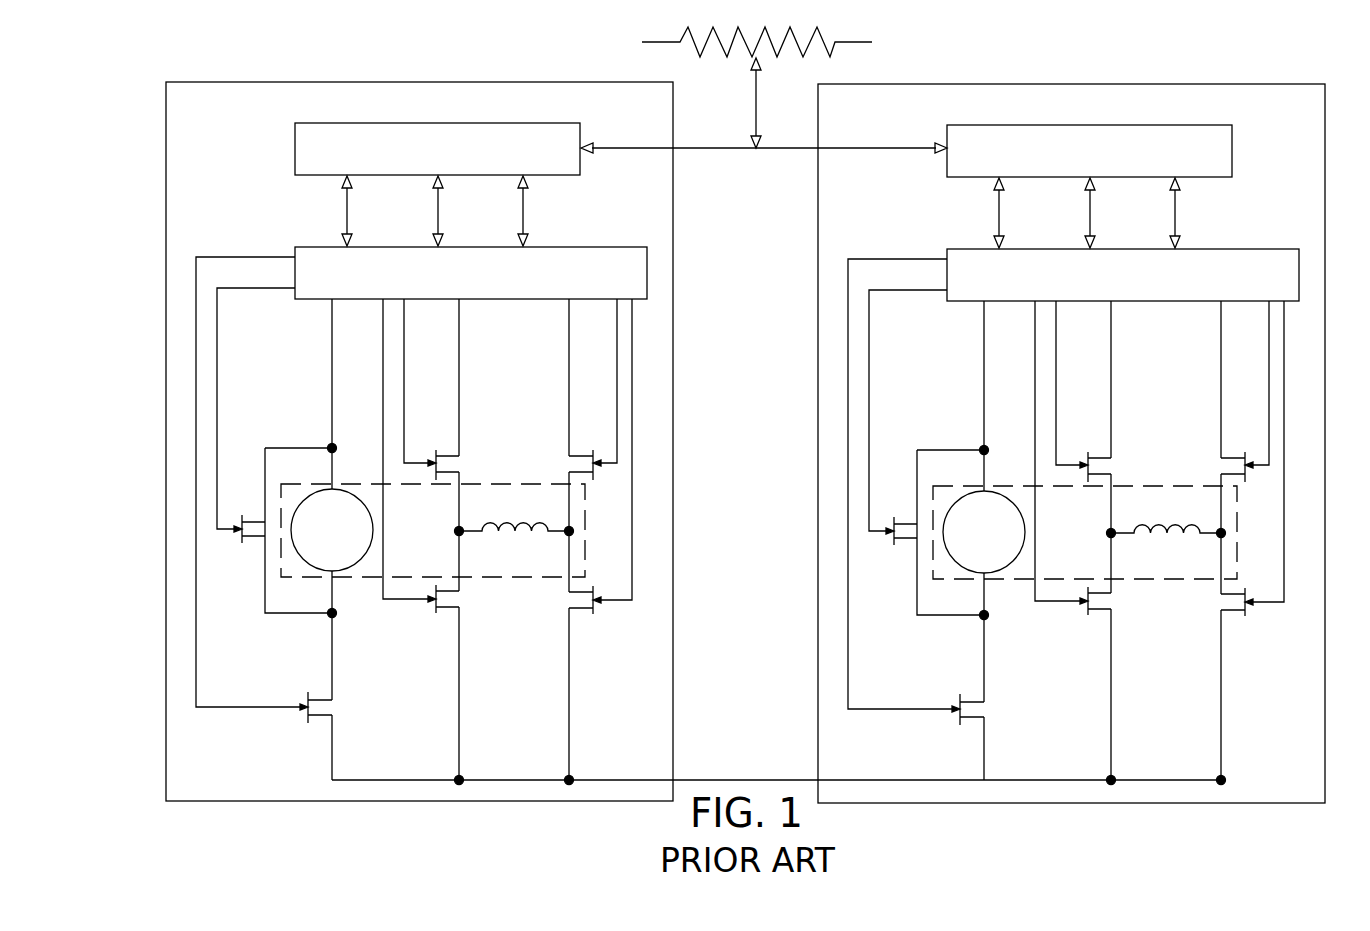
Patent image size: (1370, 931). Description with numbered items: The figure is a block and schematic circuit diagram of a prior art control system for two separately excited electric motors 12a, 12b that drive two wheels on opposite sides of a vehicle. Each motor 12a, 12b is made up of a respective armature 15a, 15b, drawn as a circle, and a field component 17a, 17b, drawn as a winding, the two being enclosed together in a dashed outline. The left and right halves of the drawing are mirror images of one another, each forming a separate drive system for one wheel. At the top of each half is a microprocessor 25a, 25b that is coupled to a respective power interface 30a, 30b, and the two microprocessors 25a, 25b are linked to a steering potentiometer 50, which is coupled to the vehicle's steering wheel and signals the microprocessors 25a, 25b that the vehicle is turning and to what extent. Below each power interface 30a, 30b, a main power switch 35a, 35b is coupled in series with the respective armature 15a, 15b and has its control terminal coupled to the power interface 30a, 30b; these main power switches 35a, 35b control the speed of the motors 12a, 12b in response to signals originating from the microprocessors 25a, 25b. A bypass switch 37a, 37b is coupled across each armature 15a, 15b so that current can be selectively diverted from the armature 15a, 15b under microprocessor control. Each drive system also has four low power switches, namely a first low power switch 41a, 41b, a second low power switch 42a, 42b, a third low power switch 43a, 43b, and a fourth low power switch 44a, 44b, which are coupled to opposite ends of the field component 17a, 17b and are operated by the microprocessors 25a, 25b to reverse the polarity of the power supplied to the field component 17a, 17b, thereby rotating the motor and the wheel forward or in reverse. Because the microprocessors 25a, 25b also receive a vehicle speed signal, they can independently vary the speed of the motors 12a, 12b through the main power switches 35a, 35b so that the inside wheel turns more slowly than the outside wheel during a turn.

The steering potentiometer 50 is at (738, 55).
The microprocessor 25a is at (425, 122).
The microprocessor 25b is at (1089, 135).
The power interface 30a is at (322, 246).
The power interface 30b is at (1100, 256).
The armature 15a is at (318, 490).
The armature 15b is at (973, 512).
The field component 17a is at (492, 537).
The field component 17b is at (1166, 534).
The electric motor 12a is at (485, 580).
The electric motor 12b is at (1085, 552).
The main power switch 35a is at (337, 710).
The main power switch 35b is at (1003, 706).
The bypass switch 37a is at (255, 547).
The bypass switch 37b is at (891, 553).
The first low power switch 41a is at (453, 464).
The first low power switch 41b is at (1122, 457).
The second low power switch 42a is at (445, 613).
The second low power switch 42b is at (1076, 615).
The third low power switch 43a is at (568, 463).
The third low power switch 43b is at (1213, 446).
The fourth low power switch 44a is at (578, 608).
The fourth low power switch 44b is at (1258, 616).